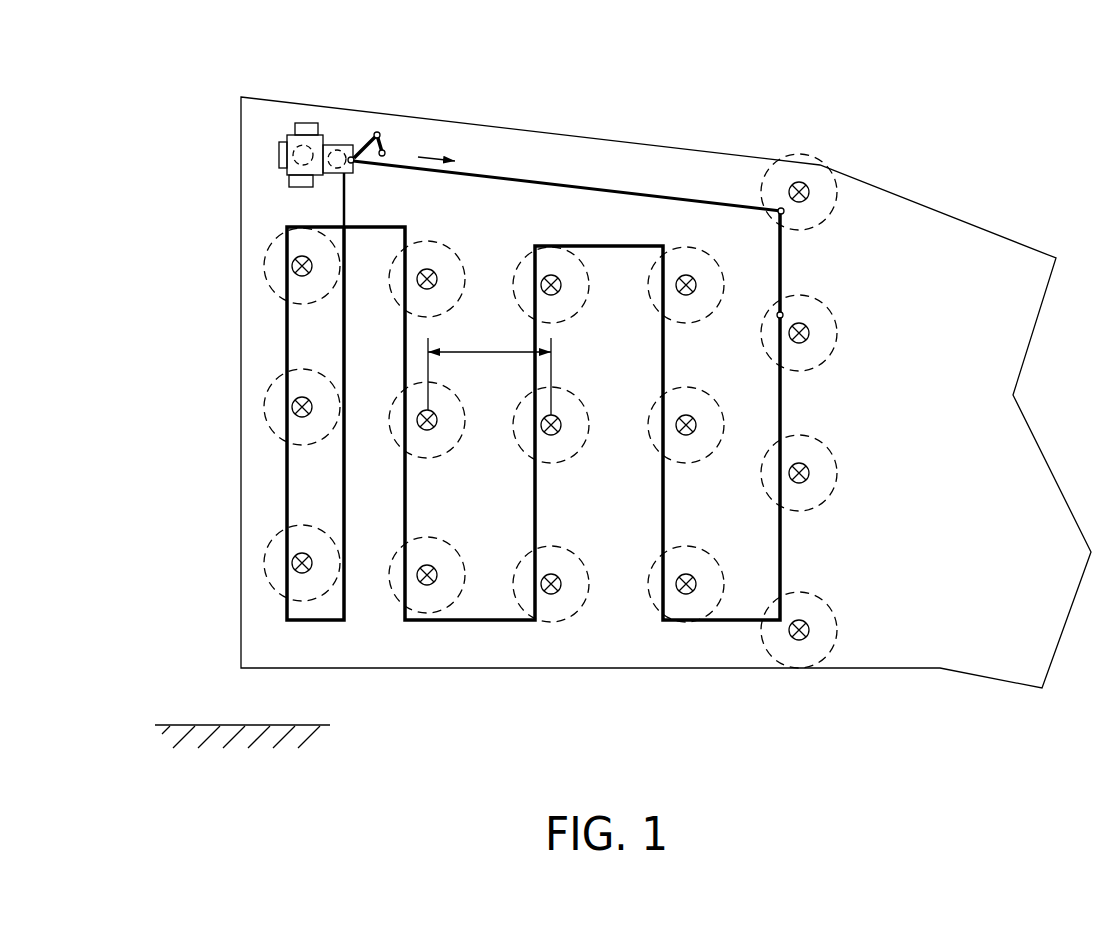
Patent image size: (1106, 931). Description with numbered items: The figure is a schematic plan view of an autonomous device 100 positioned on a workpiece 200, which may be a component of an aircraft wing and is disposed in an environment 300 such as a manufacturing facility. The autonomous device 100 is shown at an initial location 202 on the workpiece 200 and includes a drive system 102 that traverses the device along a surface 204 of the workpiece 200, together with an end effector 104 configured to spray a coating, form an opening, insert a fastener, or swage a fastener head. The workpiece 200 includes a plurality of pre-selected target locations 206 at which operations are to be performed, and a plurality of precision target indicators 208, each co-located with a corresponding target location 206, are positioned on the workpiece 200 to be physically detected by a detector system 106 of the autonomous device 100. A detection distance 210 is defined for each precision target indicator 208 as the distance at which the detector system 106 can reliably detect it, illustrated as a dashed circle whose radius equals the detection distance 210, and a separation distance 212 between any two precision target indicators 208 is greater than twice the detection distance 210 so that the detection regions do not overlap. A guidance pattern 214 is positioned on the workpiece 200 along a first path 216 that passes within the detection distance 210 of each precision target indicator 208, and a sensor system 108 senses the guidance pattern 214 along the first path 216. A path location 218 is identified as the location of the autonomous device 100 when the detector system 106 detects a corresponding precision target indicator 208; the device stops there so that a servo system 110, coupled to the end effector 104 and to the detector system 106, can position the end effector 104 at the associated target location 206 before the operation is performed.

The autonomous device 100 is at (290, 167).
The drive system 102 is at (303, 123).
The end effector 104 is at (385, 153).
The detector system 106 is at (287, 132).
The sensor system 108 is at (332, 143).
The servo system 110 is at (377, 133).
The workpiece 200 is at (914, 668).
The initial location 202 is at (280, 185).
The surface 204 is at (955, 424).
The target location 206 is at (287, 402).
The precision target indicator 208 is at (302, 552).
The detection distance 210 is at (827, 312).
The separation distance 212 is at (488, 350).
The guidance pattern 214 is at (559, 185).
The first path 216 is at (648, 194).
The path location 218 is at (776, 306).
The environment 300 is at (203, 725).